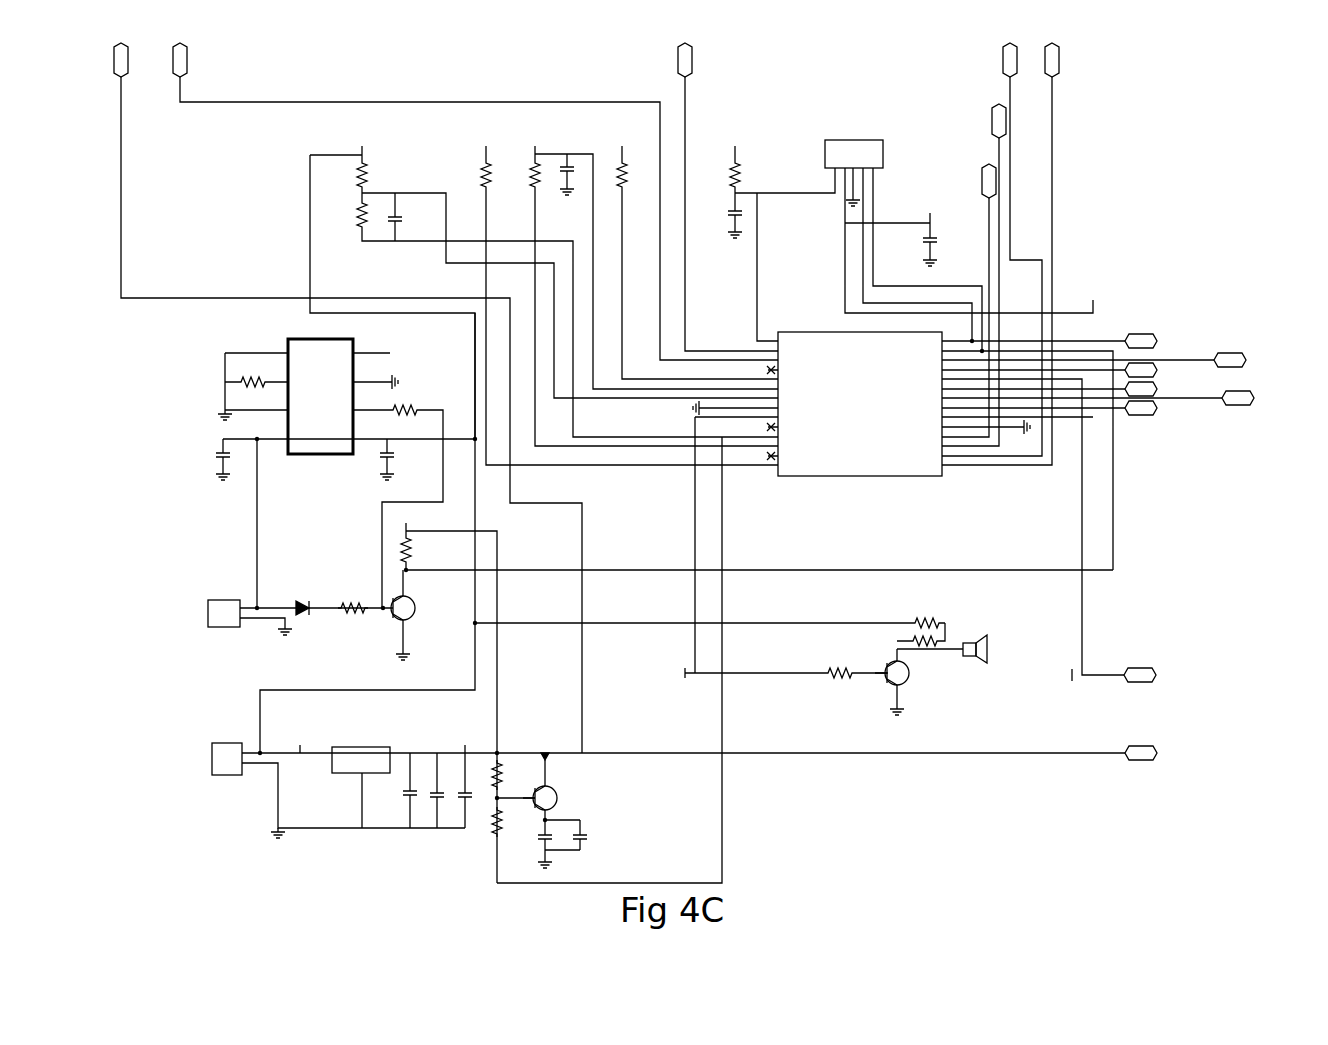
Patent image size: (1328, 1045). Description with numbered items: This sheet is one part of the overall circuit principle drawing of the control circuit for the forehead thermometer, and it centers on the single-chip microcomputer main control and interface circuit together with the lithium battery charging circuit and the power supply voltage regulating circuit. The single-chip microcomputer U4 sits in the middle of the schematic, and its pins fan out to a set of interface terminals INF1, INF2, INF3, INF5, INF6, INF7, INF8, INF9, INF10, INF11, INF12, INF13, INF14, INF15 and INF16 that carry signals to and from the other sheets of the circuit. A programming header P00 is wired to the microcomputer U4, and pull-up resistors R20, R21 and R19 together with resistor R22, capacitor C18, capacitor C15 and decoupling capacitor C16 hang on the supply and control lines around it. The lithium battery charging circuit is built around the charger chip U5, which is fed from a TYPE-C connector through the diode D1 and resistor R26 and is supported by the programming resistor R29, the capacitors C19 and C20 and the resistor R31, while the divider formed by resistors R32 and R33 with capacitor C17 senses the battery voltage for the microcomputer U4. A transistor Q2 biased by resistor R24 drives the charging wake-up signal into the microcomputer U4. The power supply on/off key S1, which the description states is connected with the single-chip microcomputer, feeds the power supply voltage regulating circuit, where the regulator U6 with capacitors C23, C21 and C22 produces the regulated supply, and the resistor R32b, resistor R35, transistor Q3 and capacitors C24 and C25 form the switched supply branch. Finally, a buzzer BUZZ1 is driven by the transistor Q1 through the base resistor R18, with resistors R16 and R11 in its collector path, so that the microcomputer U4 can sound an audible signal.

The interface connector 1 INF1 is at (319, 398).
The interface connector 2 INF2 is at (475, 201).
The interface connector 3 INF3 is at (728, 197).
The interface connector 5 INF5 is at (959, 300).
The interface connector 6 INF6 is at (968, 275).
The interface connector 7 INF7 is at (992, 249).
The interface connector 8 INF8 is at (1030, 254).
The interface connector 9 INF9 is at (1073, 341).
The interface connector 10 INF10 is at (1122, 360).
The interface connector 11 INF11 is at (1077, 372).
The interface connector 12 INF12 is at (1077, 391).
The interface connector 13 INF13 is at (1126, 398).
The interface connector 14 INF14 is at (1077, 410).
The interface connector 15 INF15 is at (1077, 532).
The interface connector 16 INF16 is at (728, 753).
The microcontroller PIC16F1938 U4 is at (805, 601).
The charger IC TP4056 U5 is at (347, 383).
The voltage regulator HT7533-1 U6 is at (375, 763).
The programming header P00 is at (959, 240).
The resistor R32 is at (367, 443).
The resistor R33 is at (567, 309).
The capacitor C17 is at (401, 217).
The resistor R20 is at (623, 299).
The resistor R21 is at (648, 290).
The capacitor C15 is at (656, 271).
The resistor R19 is at (691, 256).
The resistor R22 is at (767, 237).
The capacitor C18 is at (742, 221).
The capacitor C16 is at (931, 235).
The resistor R29 is at (256, 384).
The capacitor C19 is at (197, 459).
The capacitor C20 is at (345, 462).
The resistor R31 is at (398, 501).
The USB Type-C connector TYPE-C is at (272, 544).
The diode D1 is at (301, 610).
The resistor R26 is at (353, 609).
The transistor Q2 is at (409, 615).
The resistor R24 is at (751, 698).
The resistor R18 is at (756, 675).
The transistor Q1 is at (906, 682).
The resistor R16 is at (901, 634).
The resistor R11 is at (709, 612).
The buzzer BUZZ1 is at (978, 660).
The power supply on/off key S1 is at (338, 782).
The capacitor C23 is at (398, 790).
The capacitor C21 is at (443, 790).
The capacitor C22 is at (471, 790).
The resistor R32 (lower) R32b is at (513, 775).
The resistor R35 is at (505, 822).
The transistor Q3 is at (550, 779).
The capacitor C24 is at (571, 842).
The capacitor C25 is at (586, 836).